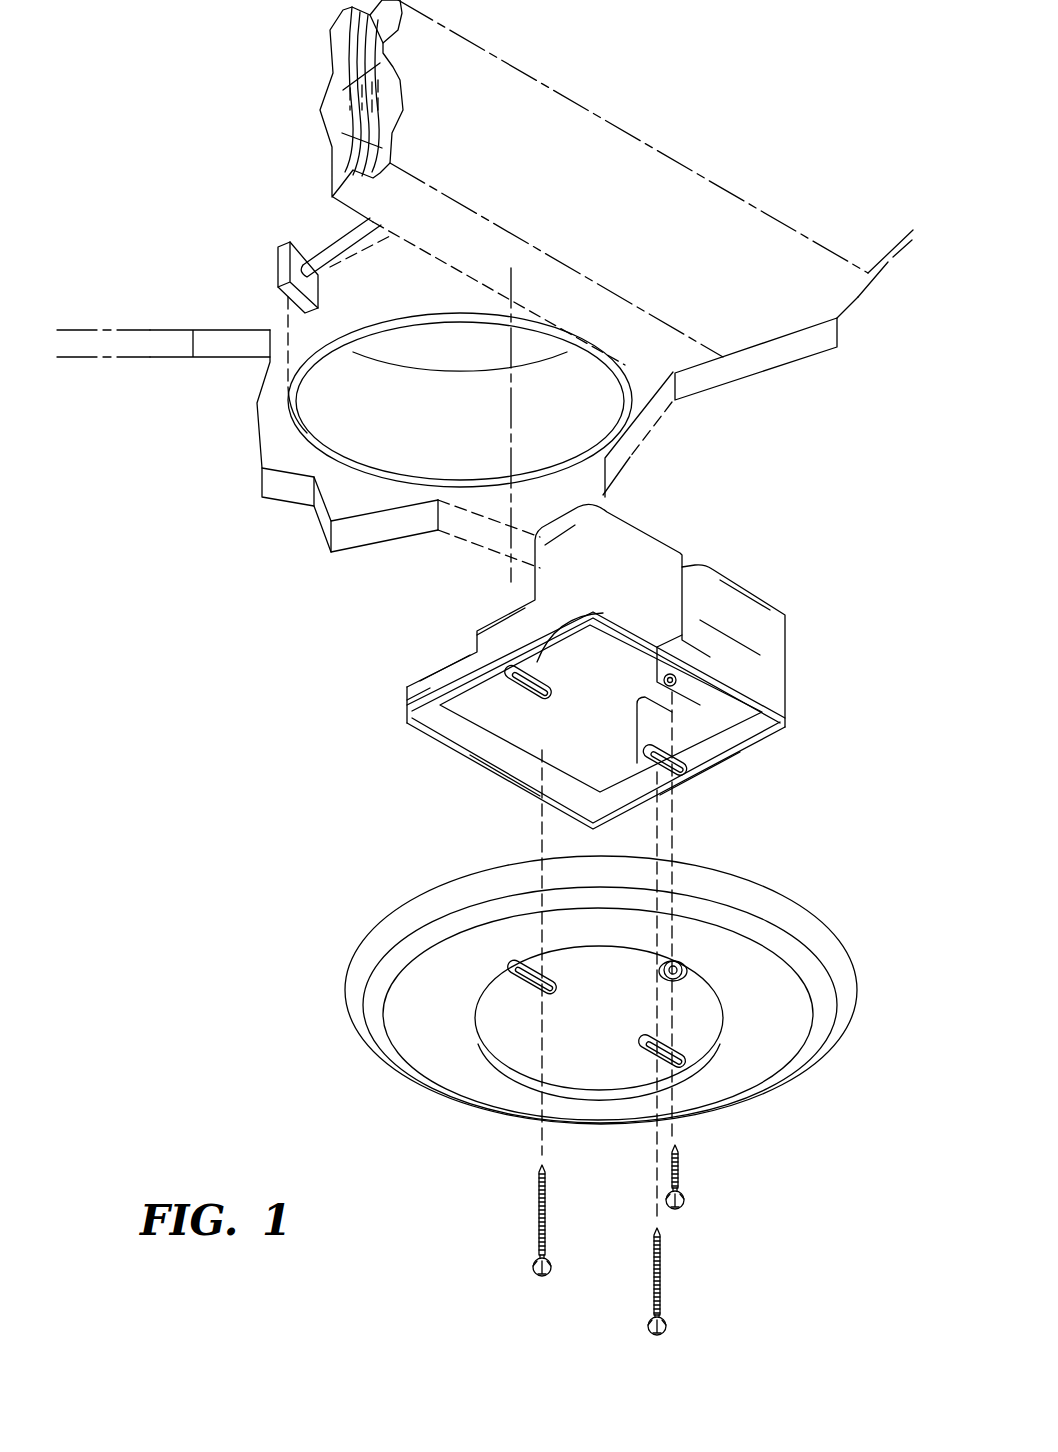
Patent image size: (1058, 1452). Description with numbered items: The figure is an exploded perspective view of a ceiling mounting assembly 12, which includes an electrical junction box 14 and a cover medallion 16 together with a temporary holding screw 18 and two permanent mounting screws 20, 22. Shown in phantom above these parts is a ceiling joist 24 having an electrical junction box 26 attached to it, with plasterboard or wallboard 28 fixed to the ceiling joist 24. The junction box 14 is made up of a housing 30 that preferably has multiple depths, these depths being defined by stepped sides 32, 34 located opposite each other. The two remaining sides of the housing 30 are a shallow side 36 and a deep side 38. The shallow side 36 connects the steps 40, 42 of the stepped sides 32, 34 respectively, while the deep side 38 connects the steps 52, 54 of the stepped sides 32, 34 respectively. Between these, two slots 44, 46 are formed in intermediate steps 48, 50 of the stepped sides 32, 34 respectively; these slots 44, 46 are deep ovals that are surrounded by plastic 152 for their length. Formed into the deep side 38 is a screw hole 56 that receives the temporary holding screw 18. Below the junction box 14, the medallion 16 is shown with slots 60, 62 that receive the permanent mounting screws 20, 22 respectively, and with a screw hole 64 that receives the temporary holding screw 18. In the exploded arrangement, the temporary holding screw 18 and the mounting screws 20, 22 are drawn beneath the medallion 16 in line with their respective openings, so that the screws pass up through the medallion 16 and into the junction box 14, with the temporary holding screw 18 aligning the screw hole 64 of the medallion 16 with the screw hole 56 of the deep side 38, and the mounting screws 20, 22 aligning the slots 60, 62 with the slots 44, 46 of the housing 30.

The ceiling mounting assembly 12 is at (284, 760).
The electrical junction box 14 is at (787, 657).
The cover medallion 16 is at (840, 930).
The temporary holding screw 18 is at (680, 1168).
The mounting screw 20 is at (540, 1212).
The mounting screw 22 is at (660, 1267).
The ceiling joist 24 is at (570, 122).
The electrical junction box 26 is at (323, 352).
The plasterboard or wallboard 28 is at (637, 448).
The housing 30 is at (777, 730).
The stepped side 32 is at (413, 687).
The stepped side 34 is at (720, 767).
The shallow side 36 is at (497, 780).
The deep side 38 is at (730, 636).
The step 40 is at (453, 657).
The step 42 is at (615, 773).
The slot 44 is at (543, 697).
The slot 46 is at (672, 777).
The intermediate step 48 is at (507, 607).
The intermediate step 50 is at (643, 698).
The step 52 is at (570, 513).
The step 54 is at (763, 600).
The screw hole 56 is at (673, 690).
The slot 60 is at (553, 977).
The slot 62 is at (647, 1035).
The screw hole 64 is at (688, 968).
The plastic 152 is at (600, 613).